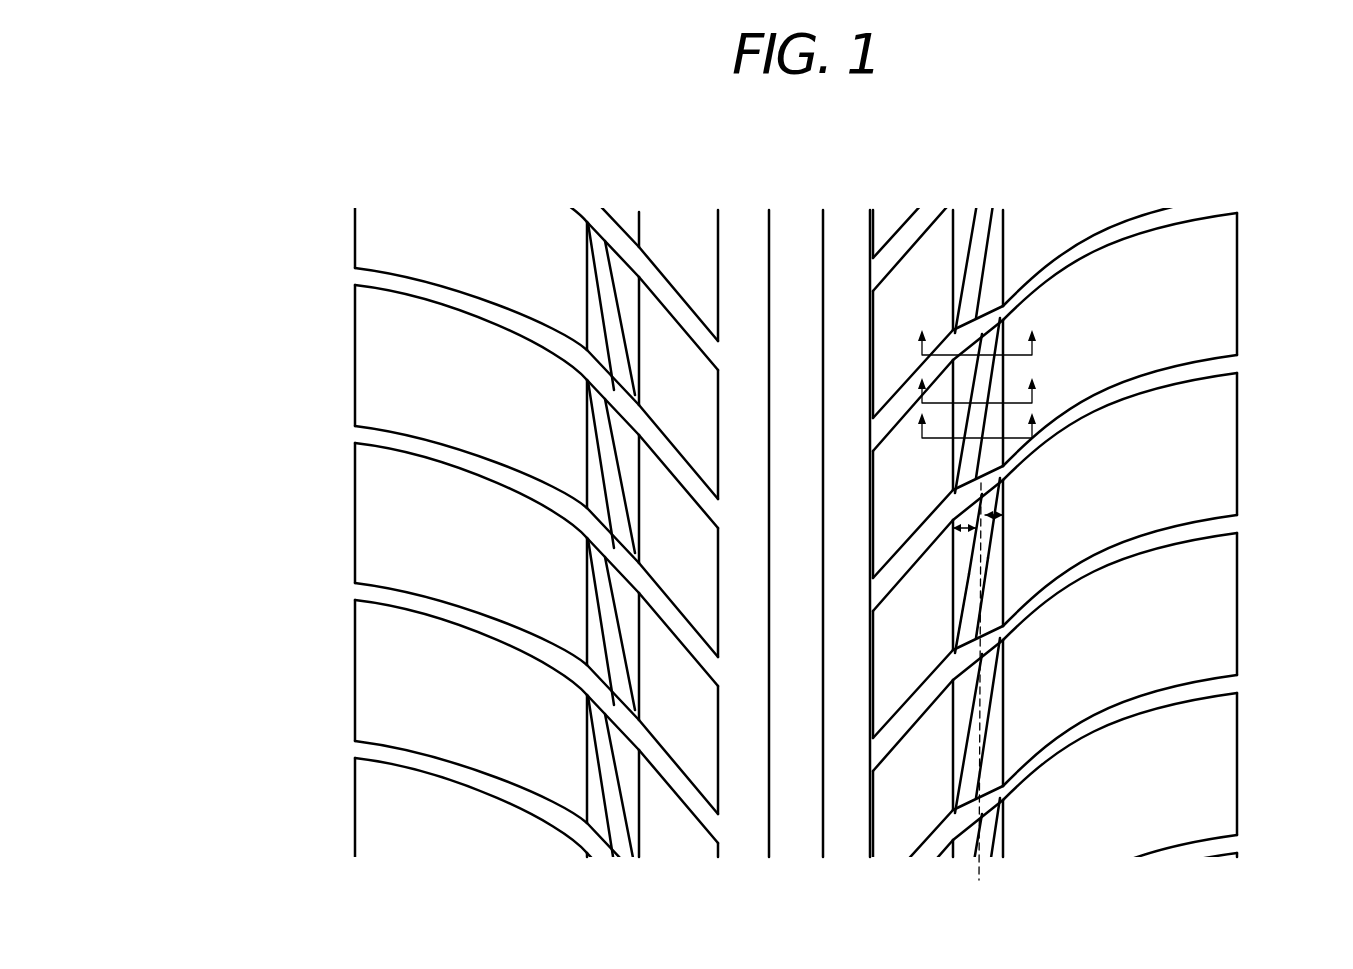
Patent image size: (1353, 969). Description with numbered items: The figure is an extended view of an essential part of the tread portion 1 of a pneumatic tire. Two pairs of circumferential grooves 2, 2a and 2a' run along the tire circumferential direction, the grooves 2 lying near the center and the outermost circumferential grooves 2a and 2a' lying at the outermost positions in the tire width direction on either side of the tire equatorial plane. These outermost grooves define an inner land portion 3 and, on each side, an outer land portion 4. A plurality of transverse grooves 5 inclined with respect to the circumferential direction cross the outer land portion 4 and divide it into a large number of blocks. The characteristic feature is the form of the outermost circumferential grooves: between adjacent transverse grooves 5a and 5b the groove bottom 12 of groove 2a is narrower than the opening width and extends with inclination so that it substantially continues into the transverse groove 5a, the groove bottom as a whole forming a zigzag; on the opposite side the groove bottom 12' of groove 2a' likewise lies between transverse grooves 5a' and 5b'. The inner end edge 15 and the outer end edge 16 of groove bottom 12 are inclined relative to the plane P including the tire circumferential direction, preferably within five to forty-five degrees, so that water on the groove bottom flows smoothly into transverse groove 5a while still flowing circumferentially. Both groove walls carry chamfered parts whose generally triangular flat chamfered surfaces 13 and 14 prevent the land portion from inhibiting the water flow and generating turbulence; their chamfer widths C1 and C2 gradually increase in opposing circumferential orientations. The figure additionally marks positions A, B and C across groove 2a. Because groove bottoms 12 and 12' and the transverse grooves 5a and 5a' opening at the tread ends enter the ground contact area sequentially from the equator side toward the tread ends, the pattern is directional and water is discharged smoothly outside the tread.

The tread portion 1 is at (1149, 214).
The circumferential groove 2 is at (740, 226).
The outermost circumferential groove 2a is at (986, 499).
The outermost circumferential groove 2a' is at (633, 499).
The inner land portion 3 is at (905, 808).
The outer land portion 4 is at (1090, 797).
The transverse groove 5 is at (1240, 687).
The transverse groove 5a is at (1166, 411).
The transverse groove 5b is at (1167, 571).
The transverse groove 5a' is at (406, 324).
The transverse groove 5b' is at (402, 482).
The groove bottom 12 is at (1135, 725).
The groove bottom 12' is at (430, 457).
The chamfered surface 13 is at (965, 578).
The chamfered surface 14 is at (993, 590).
The inner end edge 15 is at (972, 548).
The outer end edge 16 is at (990, 545).
The section line A- A is at (969, 389).
The section line B- B is at (980, 341).
The section line C- C is at (986, 435).
The chamfer width C1 is at (965, 524).
The chamfer width C2 is at (1000, 515).
The plane P is at (981, 701).